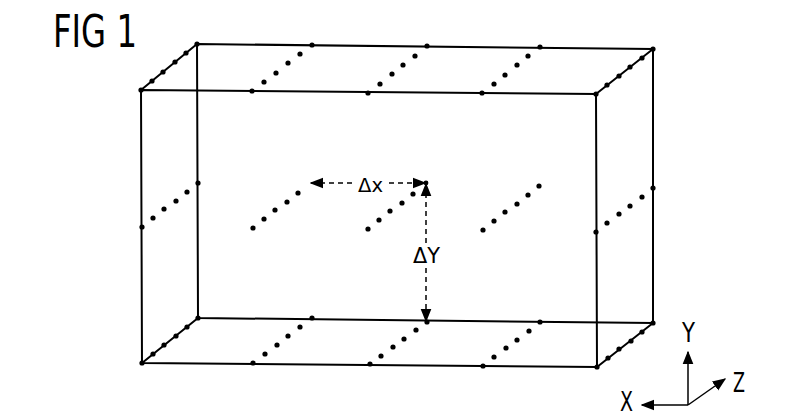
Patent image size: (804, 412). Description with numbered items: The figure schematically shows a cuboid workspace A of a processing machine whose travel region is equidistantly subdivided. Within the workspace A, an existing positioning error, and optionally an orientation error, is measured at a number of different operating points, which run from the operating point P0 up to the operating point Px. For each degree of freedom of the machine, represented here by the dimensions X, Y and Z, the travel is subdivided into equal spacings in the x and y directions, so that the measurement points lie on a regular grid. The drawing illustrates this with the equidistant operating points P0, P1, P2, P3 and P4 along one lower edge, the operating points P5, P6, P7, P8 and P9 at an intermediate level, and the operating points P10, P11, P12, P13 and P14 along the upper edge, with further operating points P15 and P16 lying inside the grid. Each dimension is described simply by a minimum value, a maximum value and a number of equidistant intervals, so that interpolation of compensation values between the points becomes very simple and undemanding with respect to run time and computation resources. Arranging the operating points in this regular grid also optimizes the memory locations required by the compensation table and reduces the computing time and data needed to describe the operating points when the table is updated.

The workspace A is at (641, 116).
The operating point Px is at (203, 31).
The operating point P0 is at (618, 358).
The operating point P1 is at (505, 358).
The operating point P2 is at (393, 358).
The operating point P3 is at (276, 356).
The operating point P4 is at (163, 356).
The operating point P5 is at (609, 225).
The operating point P6 is at (503, 223).
The operating point P7 is at (383, 227).
The operating point P8 is at (269, 225).
The operating point P9 is at (154, 218).
The operating point P10 is at (604, 86).
The operating point P11 is at (503, 84).
The operating point P12 is at (389, 83).
The operating point P13 is at (274, 83).
The operating point P14 is at (142, 87).
The operating point P15 is at (604, 357).
The operating point P16 is at (491, 356).